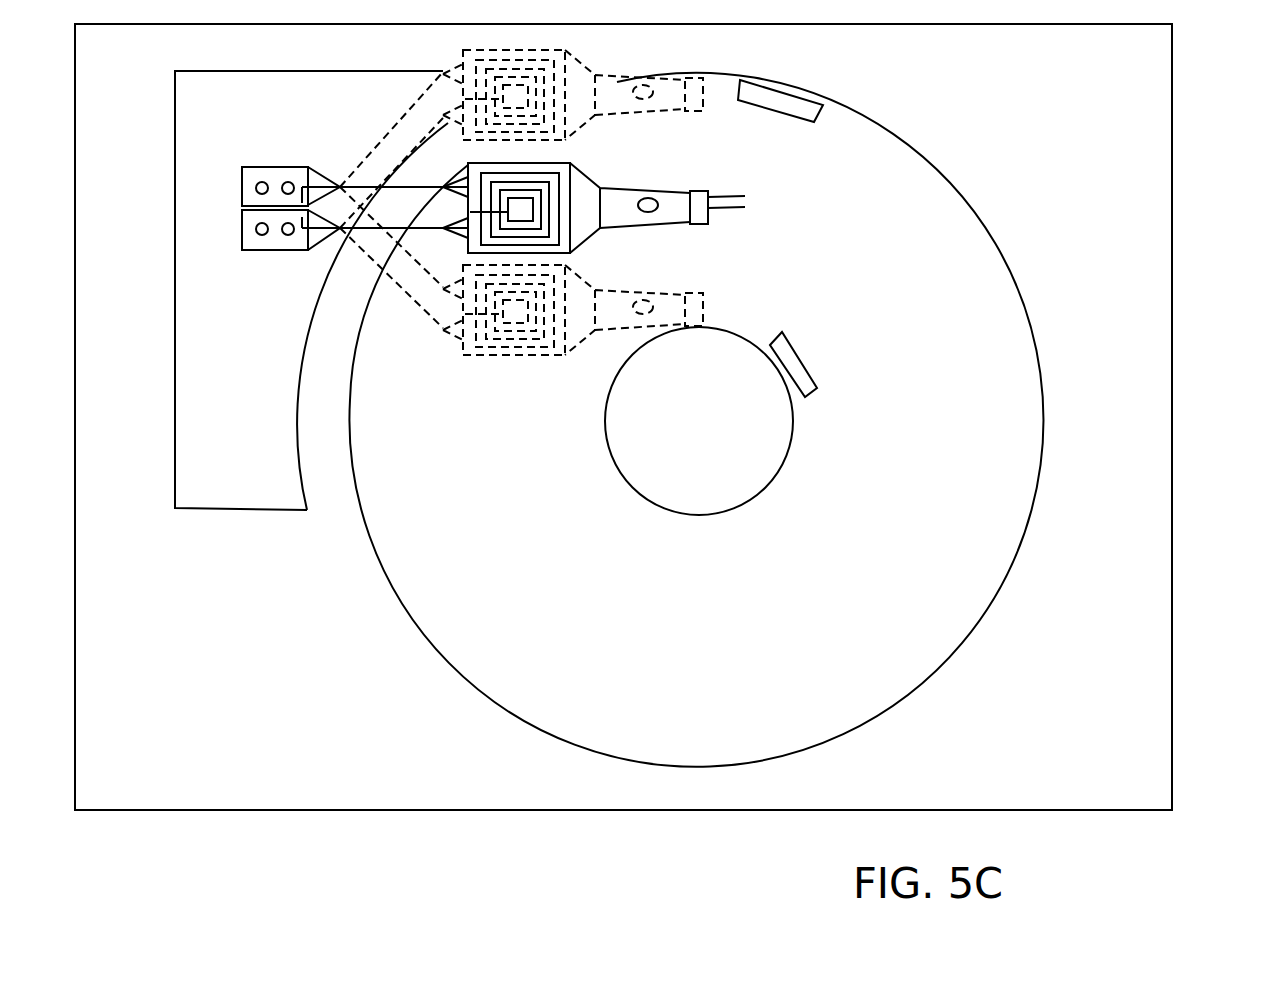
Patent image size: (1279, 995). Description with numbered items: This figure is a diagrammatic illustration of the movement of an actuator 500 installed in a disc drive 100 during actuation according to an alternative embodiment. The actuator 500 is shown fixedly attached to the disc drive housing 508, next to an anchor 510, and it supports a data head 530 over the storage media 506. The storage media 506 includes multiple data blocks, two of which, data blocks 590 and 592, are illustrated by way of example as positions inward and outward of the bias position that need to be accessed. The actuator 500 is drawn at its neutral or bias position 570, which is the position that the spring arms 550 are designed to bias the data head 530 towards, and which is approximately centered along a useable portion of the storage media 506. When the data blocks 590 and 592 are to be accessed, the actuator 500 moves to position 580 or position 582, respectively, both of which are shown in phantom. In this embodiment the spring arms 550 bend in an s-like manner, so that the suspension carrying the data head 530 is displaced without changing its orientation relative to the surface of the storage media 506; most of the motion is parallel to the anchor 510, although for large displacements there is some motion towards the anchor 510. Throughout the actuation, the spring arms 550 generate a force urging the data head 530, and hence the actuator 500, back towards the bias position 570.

The disc drive 100 is at (1194, 99).
The actuator 500 is at (539, 381).
The storage media 506 is at (983, 257).
The disc drive housing 508 is at (212, 93).
The anchor 510 is at (290, 170).
The data head 530 is at (745, 196).
The spring arms 550 is at (292, 343).
The neutral or bias position 570 is at (745, 207).
The position 580 is at (700, 92).
The position 582 is at (712, 306).
The data block 590 is at (826, 108).
The data block 592 is at (797, 373).